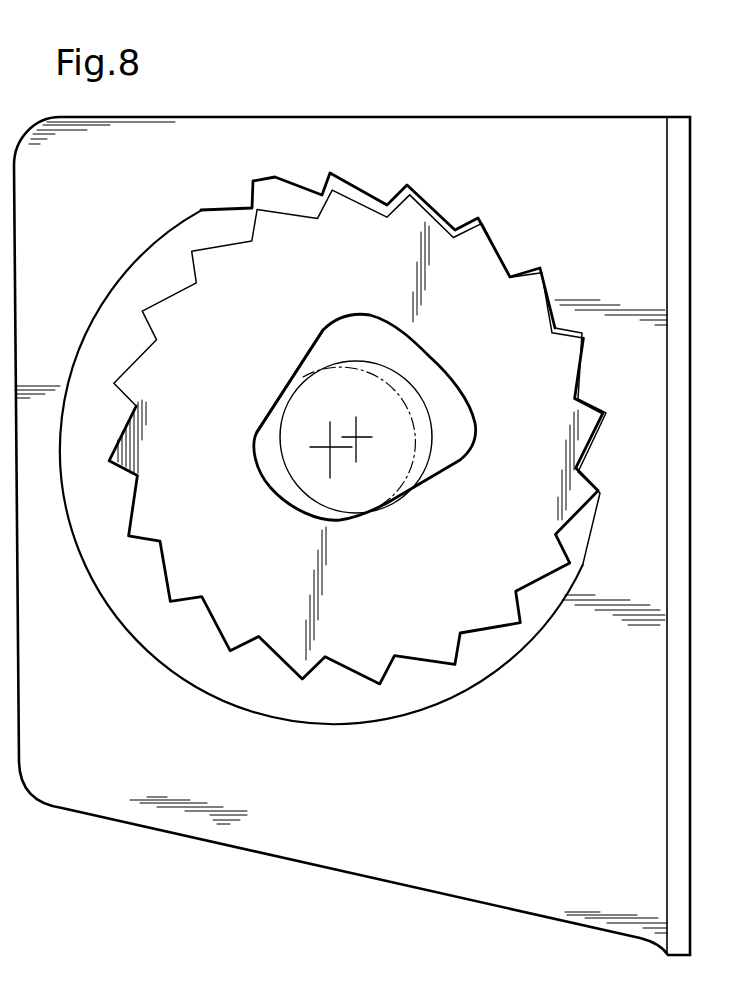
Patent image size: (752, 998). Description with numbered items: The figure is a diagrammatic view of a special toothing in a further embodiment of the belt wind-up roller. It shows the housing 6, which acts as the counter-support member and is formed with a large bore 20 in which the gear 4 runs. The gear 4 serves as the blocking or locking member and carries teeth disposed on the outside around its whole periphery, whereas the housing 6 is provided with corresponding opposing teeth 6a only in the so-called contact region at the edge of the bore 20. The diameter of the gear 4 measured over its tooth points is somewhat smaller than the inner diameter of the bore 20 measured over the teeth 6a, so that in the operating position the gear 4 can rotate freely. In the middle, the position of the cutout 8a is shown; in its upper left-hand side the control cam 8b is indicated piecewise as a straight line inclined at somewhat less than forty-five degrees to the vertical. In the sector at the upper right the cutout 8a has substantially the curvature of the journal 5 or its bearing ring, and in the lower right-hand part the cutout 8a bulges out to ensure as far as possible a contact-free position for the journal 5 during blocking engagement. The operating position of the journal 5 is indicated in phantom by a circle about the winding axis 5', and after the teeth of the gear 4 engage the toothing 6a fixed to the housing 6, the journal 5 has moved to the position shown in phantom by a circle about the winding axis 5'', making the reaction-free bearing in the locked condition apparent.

The gear 4 is at (495, 617).
The journal 5 is at (356, 392).
The winding axis 5' is at (319, 439).
The winding axis 5'' is at (384, 402).
The housing 6 is at (292, 835).
The teeth 6a is at (517, 262).
The cutout 8a is at (443, 387).
The control cam 8b is at (292, 372).
The bore 20 is at (152, 643).